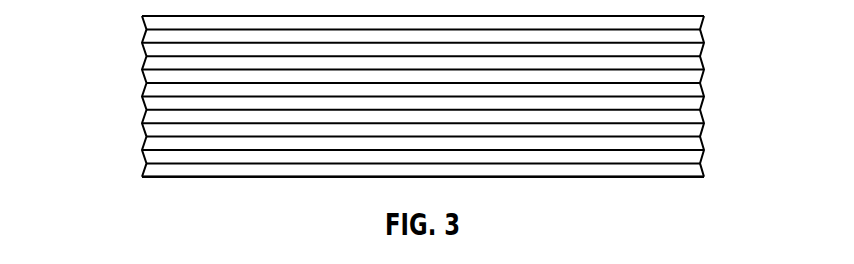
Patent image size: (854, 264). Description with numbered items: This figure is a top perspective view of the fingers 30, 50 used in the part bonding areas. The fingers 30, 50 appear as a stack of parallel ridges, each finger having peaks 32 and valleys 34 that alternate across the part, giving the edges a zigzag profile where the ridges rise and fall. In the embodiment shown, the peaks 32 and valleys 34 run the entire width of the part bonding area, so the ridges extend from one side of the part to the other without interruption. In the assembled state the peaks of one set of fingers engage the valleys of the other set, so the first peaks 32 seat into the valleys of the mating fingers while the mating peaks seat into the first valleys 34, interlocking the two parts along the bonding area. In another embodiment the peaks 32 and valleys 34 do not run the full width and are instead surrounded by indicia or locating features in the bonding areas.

The fingers 30 is at (134, 135).
The fingers 50 is at (423, 96).
The peaks 32 is at (704, 27).
The valleys 34 is at (704, 149).